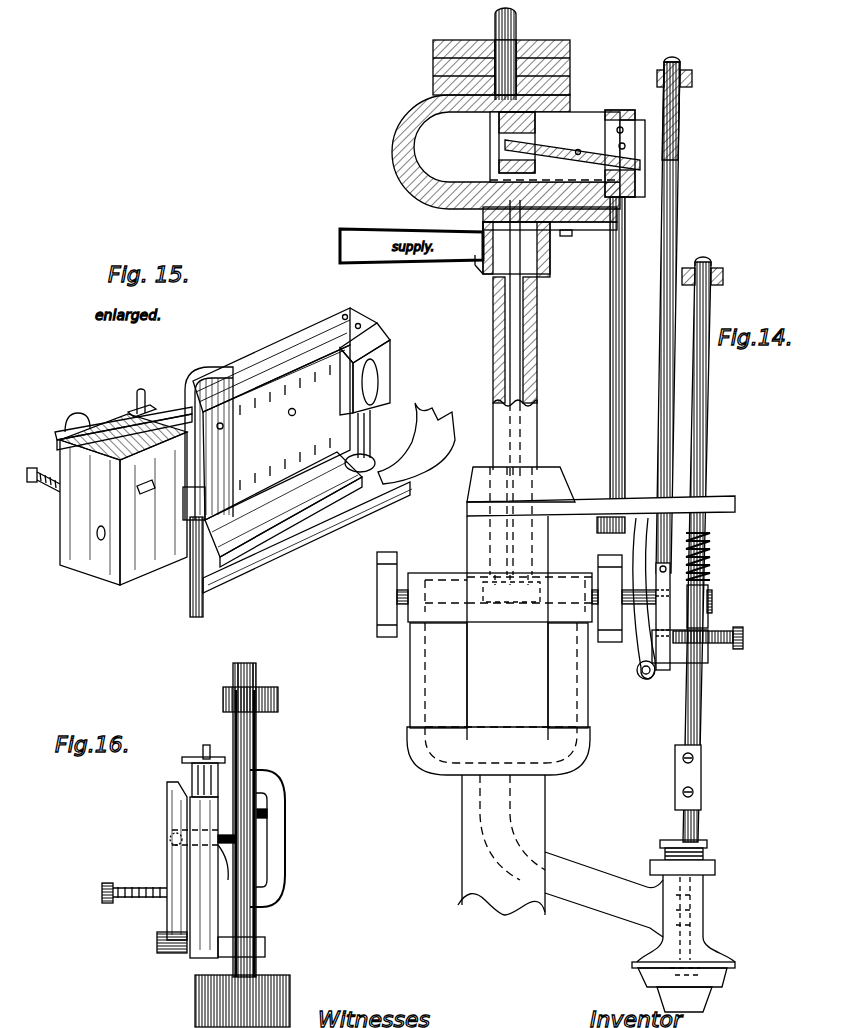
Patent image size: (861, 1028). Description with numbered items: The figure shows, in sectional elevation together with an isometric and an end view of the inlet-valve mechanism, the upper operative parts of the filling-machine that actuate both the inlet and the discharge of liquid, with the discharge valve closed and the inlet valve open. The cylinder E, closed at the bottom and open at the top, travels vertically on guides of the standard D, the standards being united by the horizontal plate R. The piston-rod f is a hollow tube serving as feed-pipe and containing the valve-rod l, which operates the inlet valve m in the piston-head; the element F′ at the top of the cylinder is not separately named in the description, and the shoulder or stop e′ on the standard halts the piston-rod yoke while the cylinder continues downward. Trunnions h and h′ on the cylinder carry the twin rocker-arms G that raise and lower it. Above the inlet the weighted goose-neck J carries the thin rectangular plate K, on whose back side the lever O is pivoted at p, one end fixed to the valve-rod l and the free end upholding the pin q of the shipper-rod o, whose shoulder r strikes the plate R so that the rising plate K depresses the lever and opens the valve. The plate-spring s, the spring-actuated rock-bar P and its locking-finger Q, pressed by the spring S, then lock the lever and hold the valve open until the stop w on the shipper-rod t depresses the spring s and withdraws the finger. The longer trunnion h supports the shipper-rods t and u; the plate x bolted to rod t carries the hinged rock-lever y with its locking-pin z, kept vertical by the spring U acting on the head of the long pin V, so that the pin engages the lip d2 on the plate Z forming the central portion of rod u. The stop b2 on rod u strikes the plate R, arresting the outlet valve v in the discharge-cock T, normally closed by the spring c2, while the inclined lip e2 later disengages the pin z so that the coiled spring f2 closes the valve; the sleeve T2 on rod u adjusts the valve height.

In FIG. 14, the goose-neck J is at (506, 152).
In FIG. 15, the goose-neck J is at (416, 443).
In FIG. 14, the lever O is at (500, 146).
In FIG. 15, the lever O is at (101, 546).
In FIG. 16, the lever O is at (228, 856).
In FIG. 14, the vertical thin rectangular plate K is at (567, 154).
In FIG. 15, the vertical thin rectangular plate K is at (210, 446).
In FIG. 14, the pin q is at (620, 126).
In FIG. 15, the pin q is at (188, 398).
In FIG. 16, the pin q is at (268, 808).
In FIG. 14, the locking-finger Q is at (624, 145).
In FIG. 15, the locking-finger Q is at (146, 494).
In FIG. 16, the locking-finger Q is at (242, 822).
In FIG. 14, the pivot p is at (575, 158).
In FIG. 15, the pivot p is at (294, 415).
In FIG. 14, the shoulder or stop w is at (692, 78).
In FIG. 16, the shoulder or stop w is at (278, 700).
In FIG. 14, the shipper-rod t is at (678, 228).
In FIG. 16, the shipper-rod t is at (256, 740).
In FIG. 14, the stop b2 is at (714, 273).
In FIG. 16, the stop b2 is at (200, 1000).
In FIG. 14, the valve-rod l is at (513, 318).
In FIG. 15, the valve-rod l is at (375, 440).
In FIG. 14, the piston-rod f is at (540, 352).
In FIG. 14, the shipper-rod o is at (609, 349).
In FIG. 15, the shipper-rod o is at (203, 612).
In FIG. 14, the shipper-rod u is at (708, 402).
In FIG. 14, the lip e2 is at (645, 530).
In FIG. 14, the horizontal plate R is at (735, 505).
In FIG. 14, the shoulder r is at (602, 525).
In FIG. 14, the rock-lever y is at (640, 552).
In FIG. 14, the trunnion h′ is at (403, 588).
In FIG. 14, the rocker-arm G is at (516, 597).
In FIG. 14, the cross head F′ is at (500, 597).
In FIG. 14, the shoulder or stop e′ is at (444, 612).
In FIG. 14, the valve m is at (505, 594).
In FIG. 14, the trunnion h is at (594, 588).
In FIG. 14, the locking-pin z is at (657, 616).
In FIG. 14, the lip d2 is at (708, 592).
In FIG. 14, the plate Z is at (694, 612).
In FIG. 14, the long pin V is at (745, 636).
In FIG. 14, the spring U is at (720, 650).
In FIG. 14, the plate x is at (652, 680).
In FIG. 14, the cylinder E is at (507, 621).
In FIG. 14, the standard D is at (501, 845).
In FIG. 14, the discharge-cock T is at (604, 894).
In FIG. 14, the sleeve T2 is at (701, 770).
In FIG. 14, the spring c2 is at (703, 893).
In FIG. 14, the outlet-valve v is at (703, 966).
In FIG. 14, the coiled spring f2 is at (712, 545).
In FIG. 15, the rock-bar P is at (74, 428).
In FIG. 16, the rock-bar P is at (166, 797).
In FIG. 15, the plate-spring s is at (129, 413).
In FIG. 16, the plate-spring s is at (198, 756).
In FIG. 15, the spring S is at (46, 492).
In FIG. 16, the spring S is at (140, 905).